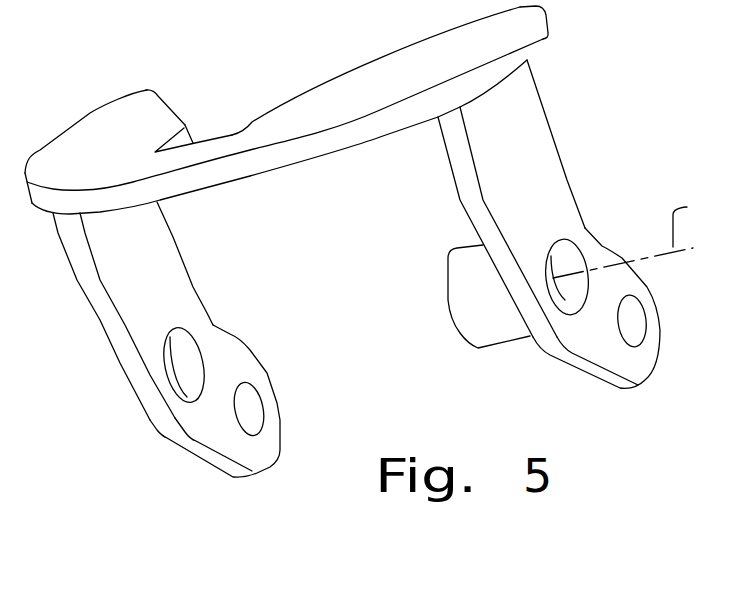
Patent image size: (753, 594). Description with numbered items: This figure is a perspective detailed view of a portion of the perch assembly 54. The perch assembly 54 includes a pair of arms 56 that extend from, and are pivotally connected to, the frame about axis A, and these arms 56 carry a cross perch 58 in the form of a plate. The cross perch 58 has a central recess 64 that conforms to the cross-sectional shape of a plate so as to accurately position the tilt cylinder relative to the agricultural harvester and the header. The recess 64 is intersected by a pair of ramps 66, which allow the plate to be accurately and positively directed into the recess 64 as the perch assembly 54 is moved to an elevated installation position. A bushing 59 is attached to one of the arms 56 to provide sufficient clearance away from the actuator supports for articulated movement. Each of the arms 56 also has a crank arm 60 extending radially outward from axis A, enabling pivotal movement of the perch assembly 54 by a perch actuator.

The perch assembly 54 is at (590, 93).
The arms 56 is at (107, 330).
The cross perch 58 is at (361, 104).
The bushing 59 is at (472, 330).
The crank arm 60 is at (215, 458).
The central recess 64 is at (199, 142).
The ramps 66 is at (160, 103).